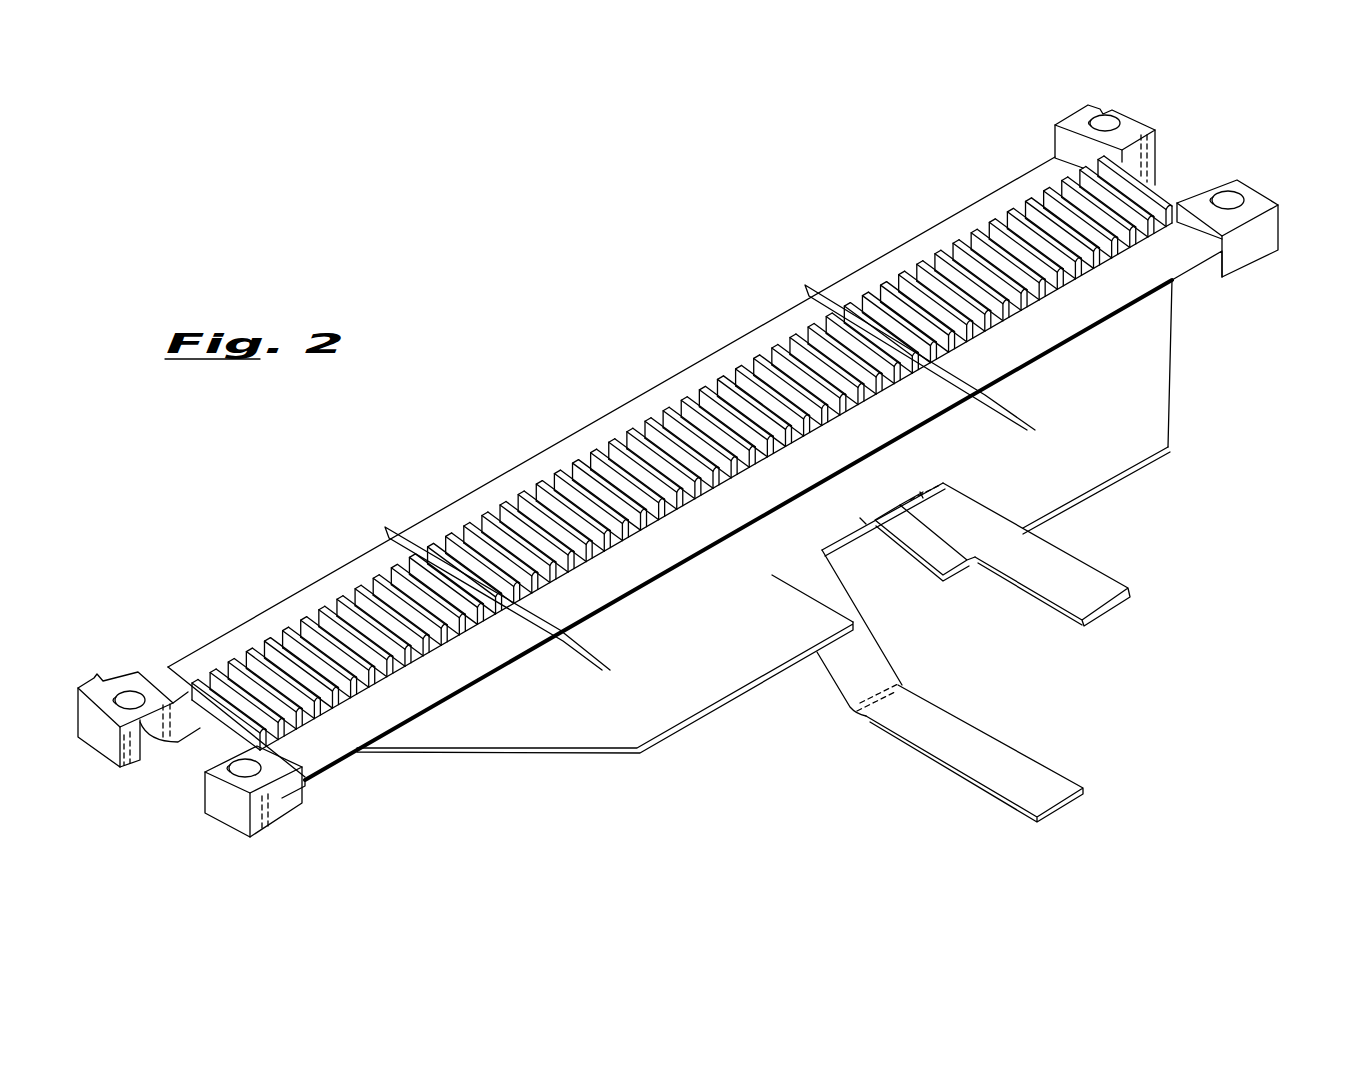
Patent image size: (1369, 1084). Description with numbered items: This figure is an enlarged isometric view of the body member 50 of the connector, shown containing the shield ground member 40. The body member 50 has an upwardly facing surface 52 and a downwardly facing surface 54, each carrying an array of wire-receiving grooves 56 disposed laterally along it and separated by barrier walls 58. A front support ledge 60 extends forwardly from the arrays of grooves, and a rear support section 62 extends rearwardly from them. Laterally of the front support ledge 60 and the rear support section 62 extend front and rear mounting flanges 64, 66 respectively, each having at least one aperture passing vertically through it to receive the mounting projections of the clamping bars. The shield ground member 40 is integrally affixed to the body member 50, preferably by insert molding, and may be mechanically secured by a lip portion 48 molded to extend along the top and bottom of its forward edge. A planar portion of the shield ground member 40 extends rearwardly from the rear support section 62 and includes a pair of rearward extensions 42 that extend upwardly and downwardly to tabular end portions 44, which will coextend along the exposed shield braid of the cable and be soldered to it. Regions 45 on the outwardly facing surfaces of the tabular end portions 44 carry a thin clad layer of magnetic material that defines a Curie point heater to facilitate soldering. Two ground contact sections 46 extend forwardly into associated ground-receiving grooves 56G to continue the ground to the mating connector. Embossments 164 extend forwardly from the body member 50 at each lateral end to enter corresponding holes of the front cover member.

The shield ground member 40 is at (663, 712).
The rearward extensions 42 is at (882, 513).
The tabular end portions 44 is at (1027, 587).
The regions 45 is at (925, 488).
The ground contact sections 46 is at (408, 530).
The lip portion 48 is at (473, 680).
The body member 50 is at (685, 496).
The upwardly facing surface 52 is at (387, 708).
The downwardly facing surface 54 is at (338, 772).
The wire-receiving grooves 56 is at (272, 619).
The ground-receiving grooves 56G is at (438, 547).
The barrier walls 58 is at (355, 588).
The front support ledge 60 is at (203, 657).
The rear support section 62 is at (335, 737).
The front mounting flange 64 is at (1136, 124).
The rear mounting flange 66 is at (222, 808).
The embossments 164 is at (107, 680).